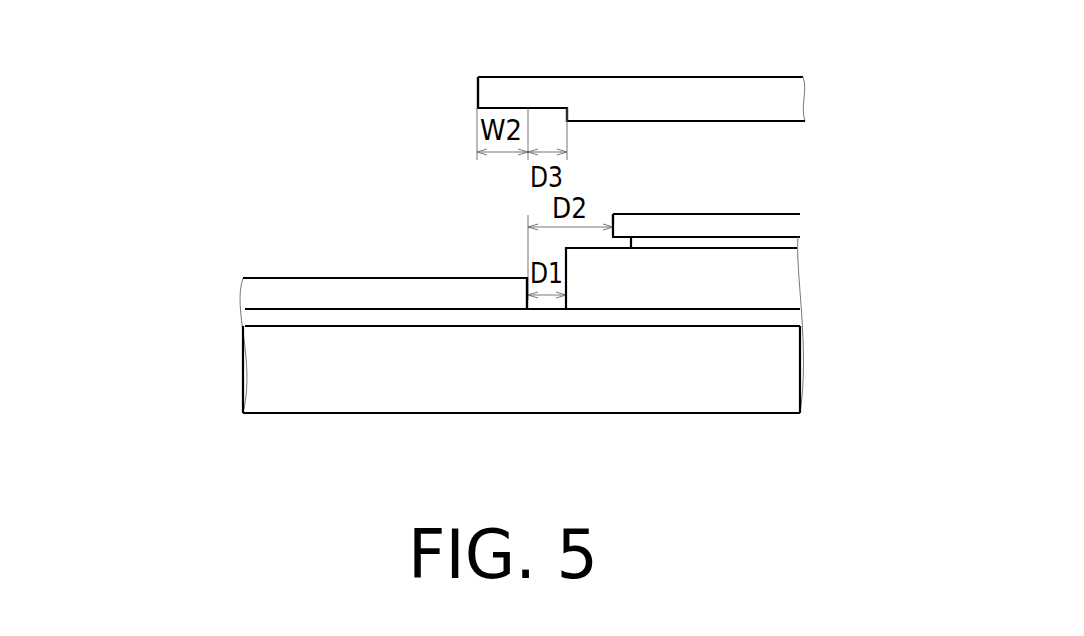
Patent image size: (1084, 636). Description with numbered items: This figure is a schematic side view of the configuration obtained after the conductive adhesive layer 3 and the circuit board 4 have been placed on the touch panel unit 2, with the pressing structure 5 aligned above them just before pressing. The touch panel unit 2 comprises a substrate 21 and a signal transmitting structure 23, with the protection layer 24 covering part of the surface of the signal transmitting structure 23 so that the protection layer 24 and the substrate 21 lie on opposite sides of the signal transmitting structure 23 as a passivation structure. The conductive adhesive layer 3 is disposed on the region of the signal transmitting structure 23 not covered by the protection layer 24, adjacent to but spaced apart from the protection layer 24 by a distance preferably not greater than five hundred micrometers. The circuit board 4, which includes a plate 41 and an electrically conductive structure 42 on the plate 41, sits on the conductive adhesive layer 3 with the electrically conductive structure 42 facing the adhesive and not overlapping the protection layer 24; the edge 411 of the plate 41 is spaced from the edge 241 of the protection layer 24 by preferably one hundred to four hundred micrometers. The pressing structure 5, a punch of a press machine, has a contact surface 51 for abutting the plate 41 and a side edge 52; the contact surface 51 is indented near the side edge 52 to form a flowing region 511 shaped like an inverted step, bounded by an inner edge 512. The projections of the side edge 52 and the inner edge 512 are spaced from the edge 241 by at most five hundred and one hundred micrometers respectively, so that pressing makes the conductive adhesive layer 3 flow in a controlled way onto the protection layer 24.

The touch panel unit 2 is at (182, 295).
The substrate 21 is at (753, 385).
The signal transmitting structure 23 is at (250, 317).
The protection layer 24 is at (318, 293).
The edge of the protection layer 241 is at (527, 289).
The conductive adhesive layer 3 is at (776, 292).
The circuit board 4 is at (762, 196).
The plate 41 is at (775, 227).
The edge of the plate 411 is at (612, 212).
The electrically conductive structure 42 is at (783, 242).
The pressing structure 5 is at (787, 100).
The contact surface 51 is at (758, 122).
The flowing region 511 is at (492, 107).
The inner edge 512 is at (567, 112).
The side edge 52 is at (477, 90).